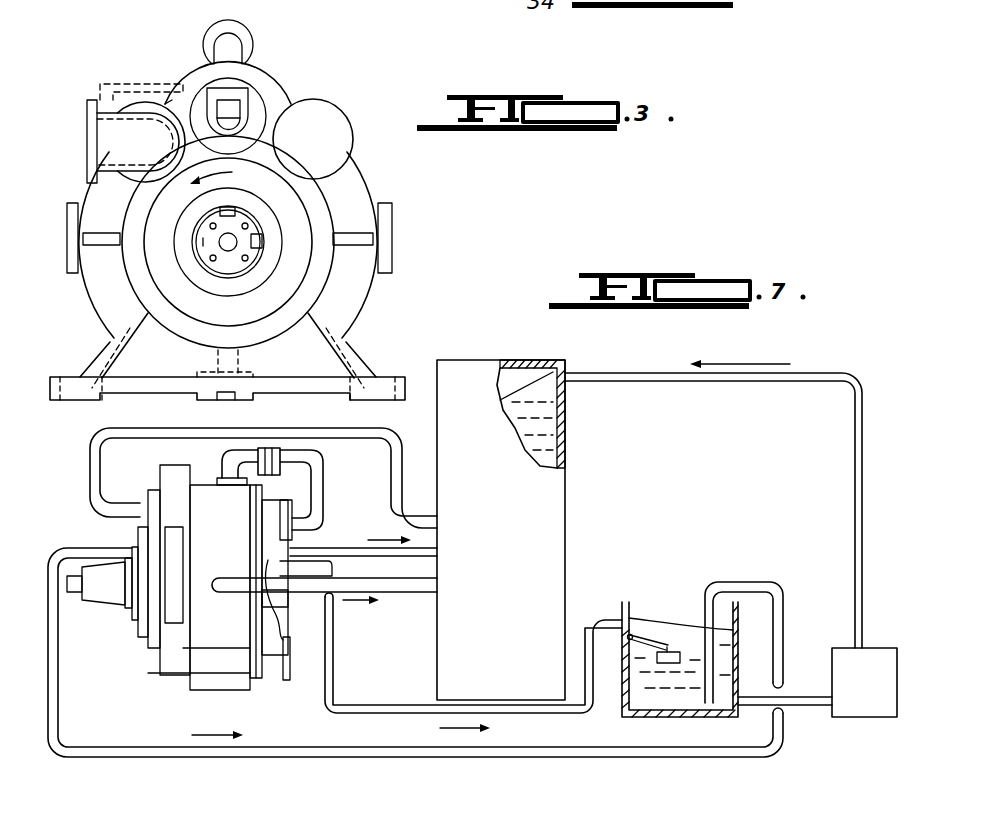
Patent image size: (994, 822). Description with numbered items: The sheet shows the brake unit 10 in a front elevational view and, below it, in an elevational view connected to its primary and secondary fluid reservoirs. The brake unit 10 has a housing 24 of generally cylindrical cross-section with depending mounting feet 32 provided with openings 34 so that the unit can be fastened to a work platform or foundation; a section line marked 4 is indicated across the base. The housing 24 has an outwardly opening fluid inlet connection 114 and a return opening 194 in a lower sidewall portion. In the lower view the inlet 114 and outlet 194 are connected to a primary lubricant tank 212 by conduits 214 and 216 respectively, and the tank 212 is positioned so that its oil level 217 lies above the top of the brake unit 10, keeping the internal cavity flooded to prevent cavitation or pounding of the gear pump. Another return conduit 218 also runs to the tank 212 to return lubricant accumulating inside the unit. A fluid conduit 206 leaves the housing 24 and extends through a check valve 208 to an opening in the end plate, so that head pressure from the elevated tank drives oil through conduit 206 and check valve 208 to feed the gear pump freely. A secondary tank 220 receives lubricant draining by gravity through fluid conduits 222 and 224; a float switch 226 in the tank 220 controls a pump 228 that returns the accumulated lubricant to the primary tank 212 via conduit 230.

In FIG. 3, the section line 4- 4 is at (262, 11).
In FIG. 3, the brake unit 10 is at (48, 272).
In FIG. 7, the brake unit 10 is at (86, 529).
In FIG. 3, the housing 24 is at (358, 183).
In FIG. 3, the mounting feet 32 is at (100, 356).
In FIG. 3, the openings 34 is at (66, 392).
In FIG. 3, the fluid inlet connection 114 is at (88, 128).
In FIG. 7, the fluid inlet connection 114 is at (142, 495).
In FIG. 3, the return opening 194 is at (398, 240).
In FIG. 7, the return opening 194 is at (214, 577).
In FIG. 7, the fluid conduit 206 is at (234, 466).
In FIG. 7, the check valve 208 is at (268, 471).
In FIG. 7, the primary lubricant reservoir 212 is at (488, 366).
In FIG. 7, the conduit 214 is at (340, 432).
In FIG. 7, the conduit 216 is at (414, 587).
In FIG. 7, the oil level 217 is at (546, 362).
In FIG. 7, the return conduit 218 is at (349, 542).
In FIG. 7, the secondary tank 220 is at (648, 602).
In FIG. 7, the fluid conduit 222 is at (336, 649).
In FIG. 7, the fluid conduit 224 is at (60, 651).
In FIG. 7, the float switch 226 is at (680, 650).
In FIG. 7, the pump 228 is at (843, 648).
In FIG. 7, the conduit 230 is at (776, 381).